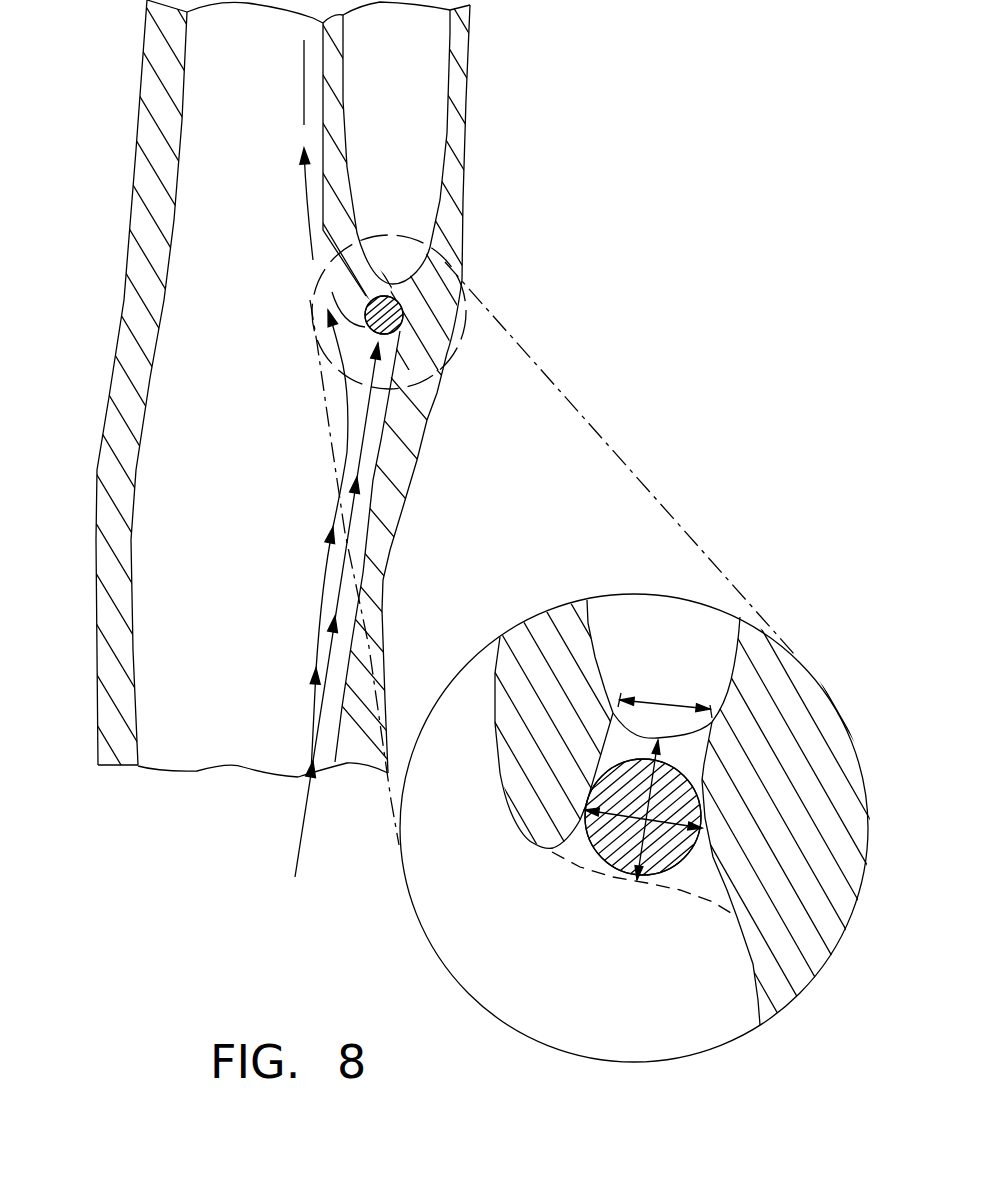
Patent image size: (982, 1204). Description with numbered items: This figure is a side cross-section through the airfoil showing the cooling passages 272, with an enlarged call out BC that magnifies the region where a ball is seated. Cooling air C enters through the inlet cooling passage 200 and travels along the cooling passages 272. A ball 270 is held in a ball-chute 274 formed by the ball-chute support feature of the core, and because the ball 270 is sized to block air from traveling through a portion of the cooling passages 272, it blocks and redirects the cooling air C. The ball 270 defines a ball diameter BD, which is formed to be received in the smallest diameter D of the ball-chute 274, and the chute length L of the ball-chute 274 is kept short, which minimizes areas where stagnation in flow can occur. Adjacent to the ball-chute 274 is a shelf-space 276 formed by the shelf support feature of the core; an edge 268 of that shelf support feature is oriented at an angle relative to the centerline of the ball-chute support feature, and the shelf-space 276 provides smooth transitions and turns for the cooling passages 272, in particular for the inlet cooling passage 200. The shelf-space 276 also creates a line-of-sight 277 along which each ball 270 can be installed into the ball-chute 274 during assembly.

The inlet cooling passage 200 is at (226, 700).
The edge of the shelf support feature 268 is at (738, 888).
The ball 270 is at (402, 308).
The cooling passages 272 is at (202, 452).
The ball-chute 274 is at (398, 336).
The shelf-space 276 is at (383, 358).
The line-of-sight 277 is at (298, 853).
The cooling air C is at (345, 445).
The smallest diameter of the ball-chute D is at (664, 706).
The chute length L is at (645, 805).
The ball diameter BD is at (662, 822).
The call out BC is at (412, 925).